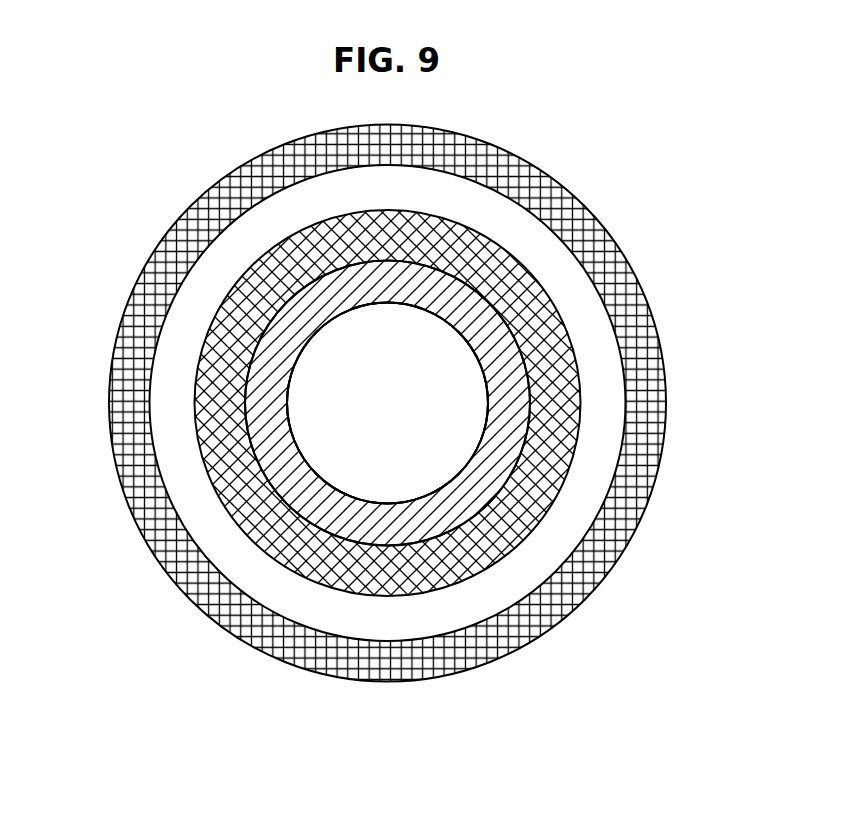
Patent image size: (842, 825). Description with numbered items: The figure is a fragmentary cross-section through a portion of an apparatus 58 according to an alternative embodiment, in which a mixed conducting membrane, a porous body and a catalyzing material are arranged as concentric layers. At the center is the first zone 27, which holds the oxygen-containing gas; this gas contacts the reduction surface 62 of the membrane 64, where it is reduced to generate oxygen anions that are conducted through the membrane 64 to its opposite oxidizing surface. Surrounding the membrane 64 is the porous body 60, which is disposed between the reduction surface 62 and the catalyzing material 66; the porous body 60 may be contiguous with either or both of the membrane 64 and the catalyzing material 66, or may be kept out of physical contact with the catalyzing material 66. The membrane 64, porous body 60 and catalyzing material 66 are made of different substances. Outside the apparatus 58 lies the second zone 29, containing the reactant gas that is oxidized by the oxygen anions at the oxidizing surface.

The apparatus 58 is at (116, 197).
The catalyzing material 66 is at (577, 218).
The porous body 60 is at (543, 315).
The membrane 64 is at (520, 387).
The reduction surface 62 is at (437, 333).
The first zone 27 is at (418, 420).
The second zone 29 is at (176, 647).